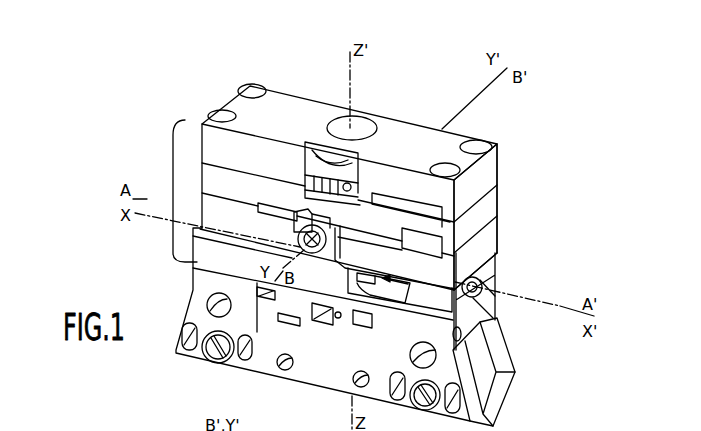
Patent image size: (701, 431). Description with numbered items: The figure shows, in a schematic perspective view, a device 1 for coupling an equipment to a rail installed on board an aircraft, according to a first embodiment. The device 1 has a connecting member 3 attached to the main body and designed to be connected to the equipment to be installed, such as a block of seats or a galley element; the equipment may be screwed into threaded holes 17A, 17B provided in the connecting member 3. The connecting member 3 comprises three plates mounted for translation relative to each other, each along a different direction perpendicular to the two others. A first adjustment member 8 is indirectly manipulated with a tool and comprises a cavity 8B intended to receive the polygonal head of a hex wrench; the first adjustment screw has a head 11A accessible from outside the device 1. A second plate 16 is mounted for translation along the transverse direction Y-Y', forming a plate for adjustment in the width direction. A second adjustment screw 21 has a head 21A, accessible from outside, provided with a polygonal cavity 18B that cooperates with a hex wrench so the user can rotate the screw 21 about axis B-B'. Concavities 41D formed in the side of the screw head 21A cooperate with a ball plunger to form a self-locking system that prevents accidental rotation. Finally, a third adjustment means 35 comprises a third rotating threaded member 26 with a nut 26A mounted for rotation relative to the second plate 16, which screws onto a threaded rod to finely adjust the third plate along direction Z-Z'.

The device 1 is at (523, 150).
The connecting member 3 is at (168, 176).
The first adjustment member 8 is at (484, 273).
The cavity 8B is at (482, 286).
The head 11A is at (488, 323).
The second plate 16 is at (490, 230).
The threaded hole 17A is at (244, 86).
The threaded hole 17B is at (478, 140).
The polygonal cavity 18B is at (312, 260).
The second adjustment screw 21 is at (315, 263).
The head 21A is at (300, 223).
The third rotating threaded member 26 is at (304, 142).
The nut 26A is at (340, 212).
The third adjustment means 35 is at (340, 218).
The concavities 41D is at (304, 212).